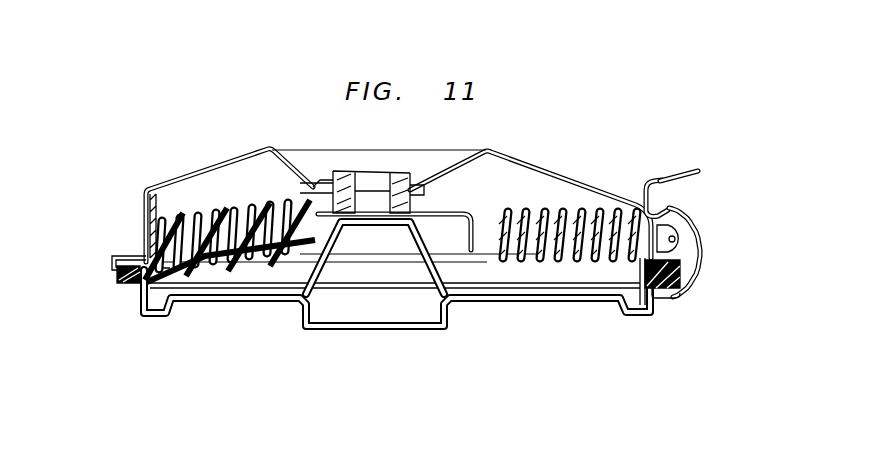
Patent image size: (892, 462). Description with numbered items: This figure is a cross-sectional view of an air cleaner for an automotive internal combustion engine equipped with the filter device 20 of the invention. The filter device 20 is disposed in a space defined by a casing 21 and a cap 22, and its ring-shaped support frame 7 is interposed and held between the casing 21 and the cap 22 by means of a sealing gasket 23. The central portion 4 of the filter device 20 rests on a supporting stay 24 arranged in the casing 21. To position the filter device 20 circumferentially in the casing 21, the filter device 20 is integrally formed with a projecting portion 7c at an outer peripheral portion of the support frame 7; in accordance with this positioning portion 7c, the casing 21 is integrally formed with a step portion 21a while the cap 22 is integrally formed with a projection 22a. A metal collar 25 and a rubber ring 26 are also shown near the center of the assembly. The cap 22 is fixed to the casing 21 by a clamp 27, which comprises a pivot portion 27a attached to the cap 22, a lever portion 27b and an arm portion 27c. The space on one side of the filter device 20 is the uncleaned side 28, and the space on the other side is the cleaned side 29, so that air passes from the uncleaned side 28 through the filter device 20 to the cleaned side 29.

The central portion 4 is at (462, 216).
The support frame 7 is at (643, 290).
The projecting portion 7c is at (147, 250).
The filter device 20 is at (262, 242).
The casing 21 is at (563, 303).
The step portion 21a is at (128, 284).
The cap 22 is at (500, 154).
The projection 22a is at (118, 256).
The sealing gasket 23 is at (682, 292).
The supporting stay 24 is at (318, 246).
The metal collar 25 is at (345, 171).
The rubber ring 26 is at (316, 185).
The clamp 27 is at (660, 182).
The pivot portion 27a is at (676, 239).
The lever portion 27b is at (688, 172).
The arm portion 27c is at (700, 270).
The uncleaned side 28 is at (252, 184).
The cleaned side 29 is at (505, 271).